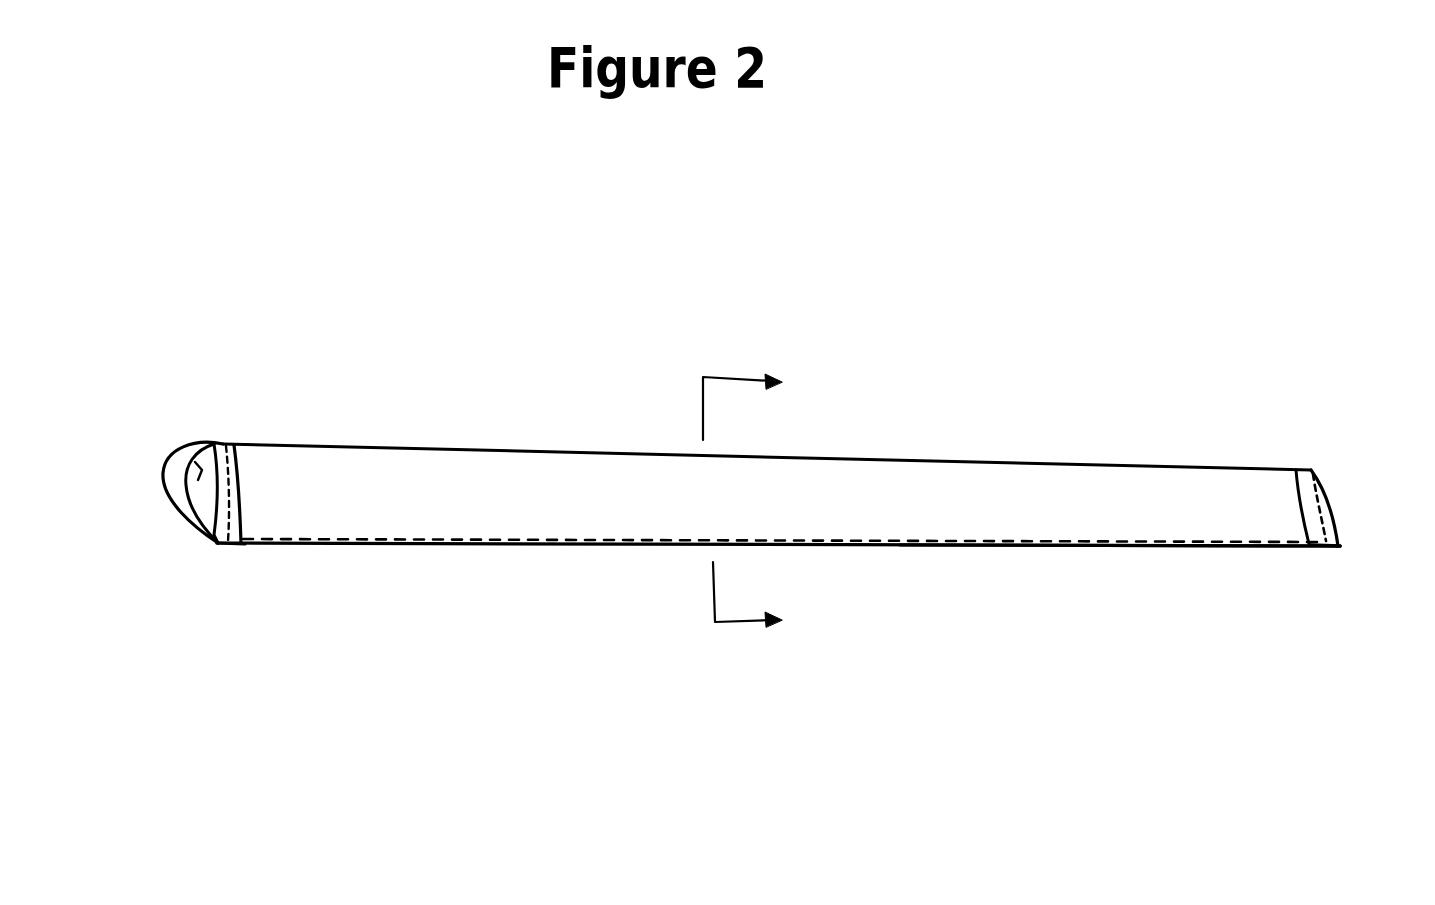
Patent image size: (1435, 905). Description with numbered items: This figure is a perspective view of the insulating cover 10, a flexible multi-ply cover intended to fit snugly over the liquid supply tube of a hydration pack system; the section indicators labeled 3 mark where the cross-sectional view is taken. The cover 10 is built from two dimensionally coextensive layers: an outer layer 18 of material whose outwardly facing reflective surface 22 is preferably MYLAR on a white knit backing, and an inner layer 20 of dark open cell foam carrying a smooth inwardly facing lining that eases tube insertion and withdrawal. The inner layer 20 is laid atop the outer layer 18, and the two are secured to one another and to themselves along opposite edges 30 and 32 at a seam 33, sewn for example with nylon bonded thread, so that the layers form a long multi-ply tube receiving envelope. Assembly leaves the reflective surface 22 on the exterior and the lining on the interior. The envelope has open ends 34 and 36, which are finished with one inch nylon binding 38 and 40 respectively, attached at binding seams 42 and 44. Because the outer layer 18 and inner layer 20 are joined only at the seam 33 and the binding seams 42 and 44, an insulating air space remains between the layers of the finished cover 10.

The insulating cover 10 is at (1092, 435).
The outer layer 18 is at (397, 473).
The inner layer 20 is at (205, 470).
The reflective surface 22 is at (457, 503).
The edge 30 is at (605, 538).
The edge 32 is at (218, 548).
The seam 33 is at (993, 546).
The open end 34 is at (1328, 513).
The open end 36 is at (185, 450).
The nylon binding 38 is at (1312, 468).
The nylon binding 40 is at (213, 445).
The binding seam 42 is at (1328, 543).
The binding seam 44 is at (242, 480).
The section line 3- 3 is at (756, 499).